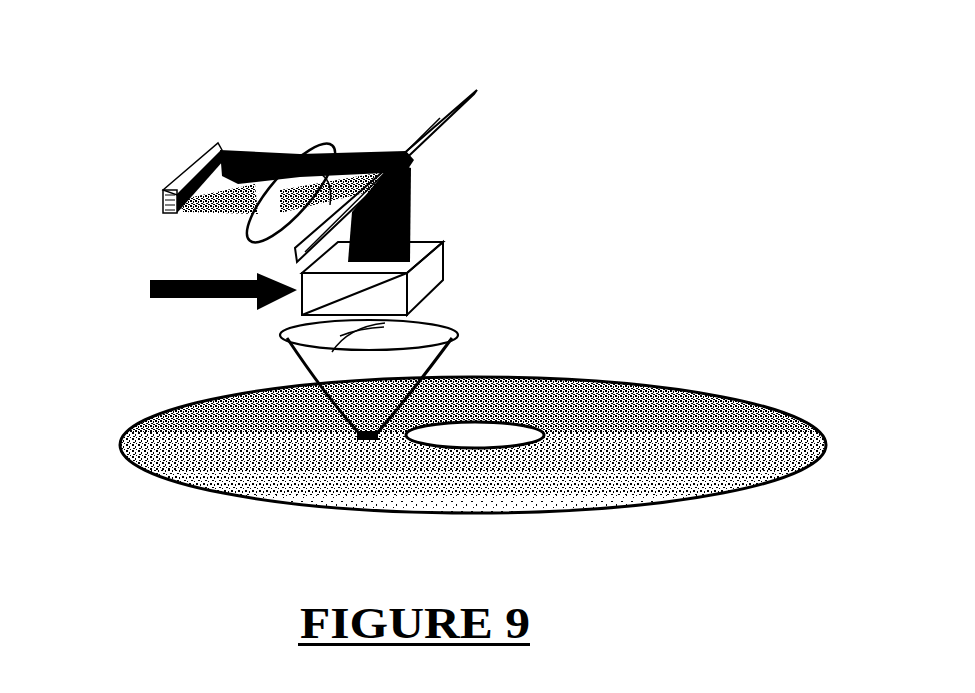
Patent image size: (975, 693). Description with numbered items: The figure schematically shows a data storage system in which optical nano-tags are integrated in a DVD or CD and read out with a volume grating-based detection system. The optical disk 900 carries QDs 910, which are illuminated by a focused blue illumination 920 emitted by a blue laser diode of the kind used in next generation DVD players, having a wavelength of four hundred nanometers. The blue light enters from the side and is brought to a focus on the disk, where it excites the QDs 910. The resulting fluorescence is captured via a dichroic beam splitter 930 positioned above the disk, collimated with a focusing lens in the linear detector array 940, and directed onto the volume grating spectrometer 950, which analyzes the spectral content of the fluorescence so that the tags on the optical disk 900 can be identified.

The optical disk 900 is at (705, 433).
The QDs 910 is at (360, 443).
The focused blue illumination 920 is at (181, 340).
The dichroic beam splitter 930 is at (422, 283).
The linear detector array 940 is at (161, 175).
The volume grating spectrometer 950 is at (295, 95).